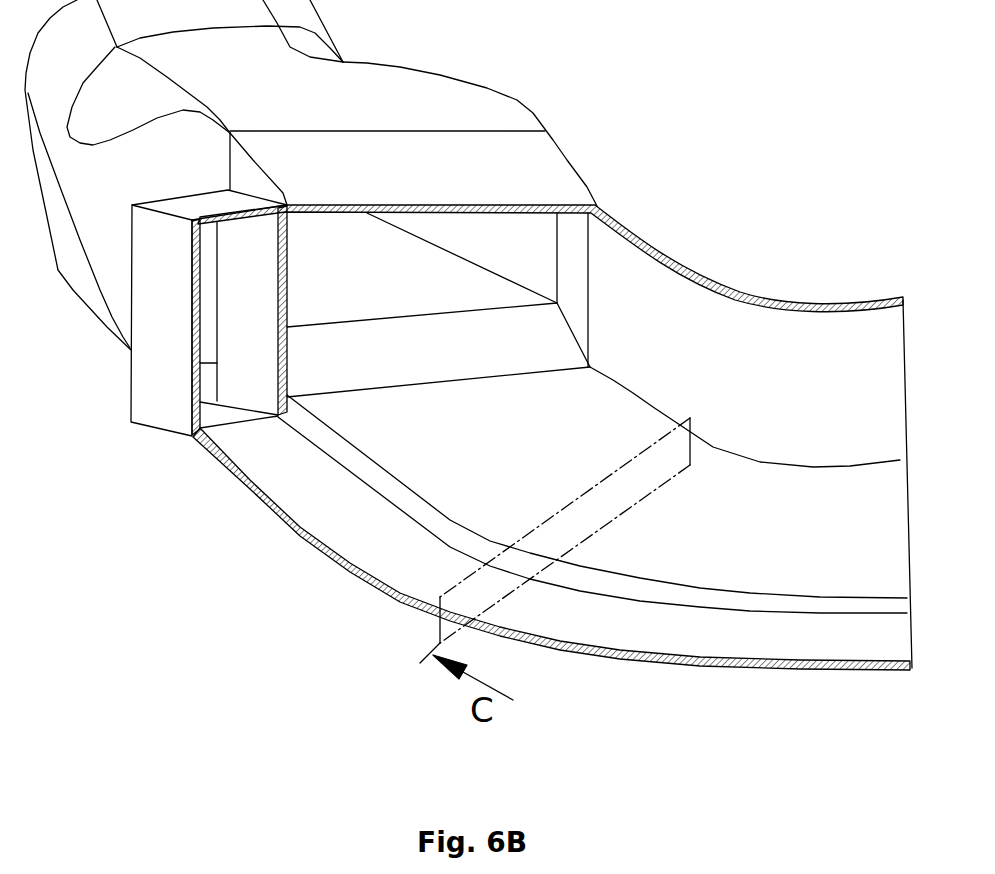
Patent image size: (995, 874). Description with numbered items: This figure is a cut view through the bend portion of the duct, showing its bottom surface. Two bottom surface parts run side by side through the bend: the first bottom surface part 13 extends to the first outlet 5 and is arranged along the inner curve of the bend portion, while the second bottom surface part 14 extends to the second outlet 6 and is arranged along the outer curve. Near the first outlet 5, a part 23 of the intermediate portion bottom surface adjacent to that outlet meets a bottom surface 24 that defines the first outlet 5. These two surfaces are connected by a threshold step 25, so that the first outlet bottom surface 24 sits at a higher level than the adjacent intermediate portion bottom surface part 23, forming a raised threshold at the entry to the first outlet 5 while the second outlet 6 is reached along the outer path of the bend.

The first outlet 5 is at (468, 237).
The second outlet 6 is at (210, 317).
The first outlet bottom surface 24 is at (433, 292).
The threshold step 25 is at (497, 343).
The intermediate portion bottom surface part 23 is at (553, 413).
The first bottom surface part 13 is at (447, 450).
The second bottom surface part 14 is at (308, 480).